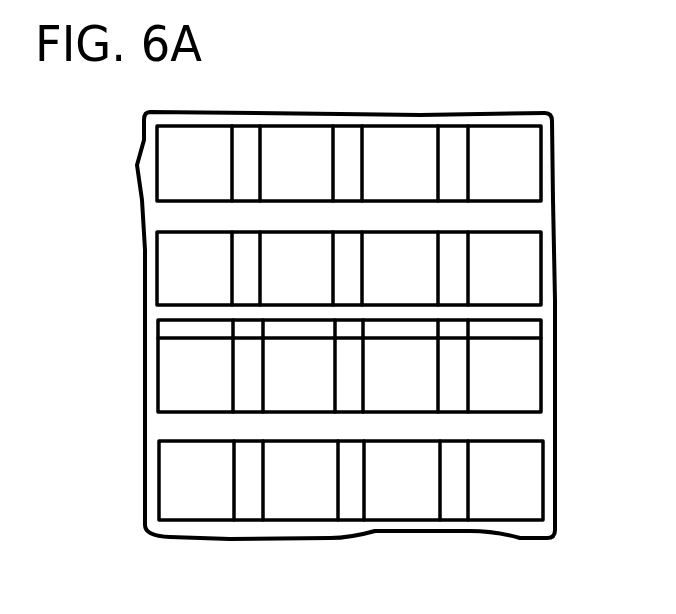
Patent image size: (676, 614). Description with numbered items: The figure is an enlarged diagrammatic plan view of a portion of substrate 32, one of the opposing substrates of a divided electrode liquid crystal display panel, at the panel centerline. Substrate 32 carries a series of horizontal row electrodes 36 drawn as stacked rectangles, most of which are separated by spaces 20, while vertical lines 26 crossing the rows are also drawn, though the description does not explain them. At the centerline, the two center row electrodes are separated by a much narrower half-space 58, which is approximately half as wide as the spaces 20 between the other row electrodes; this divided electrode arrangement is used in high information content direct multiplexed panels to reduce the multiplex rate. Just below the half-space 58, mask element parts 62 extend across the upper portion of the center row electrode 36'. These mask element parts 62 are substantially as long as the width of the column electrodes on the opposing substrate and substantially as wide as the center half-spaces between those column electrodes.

The spaces between row electrodes 20 is at (515, 216).
The conductor lines 26 is at (350, 362).
The substrate 32 is at (141, 531).
The row electrodes 36 is at (93, 325).
The row electrode 36' is at (122, 383).
The half-spaces 58 is at (530, 313).
The mask element parts 62 is at (415, 327).